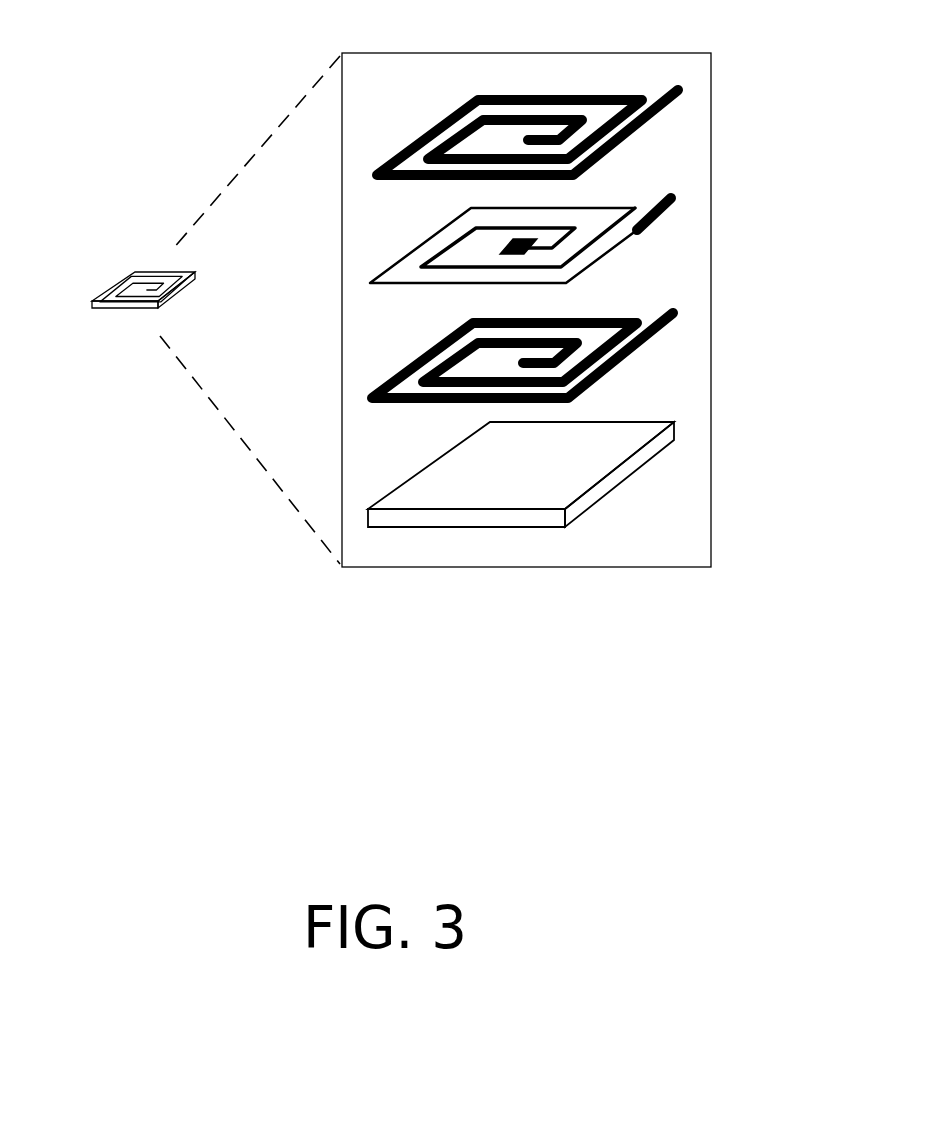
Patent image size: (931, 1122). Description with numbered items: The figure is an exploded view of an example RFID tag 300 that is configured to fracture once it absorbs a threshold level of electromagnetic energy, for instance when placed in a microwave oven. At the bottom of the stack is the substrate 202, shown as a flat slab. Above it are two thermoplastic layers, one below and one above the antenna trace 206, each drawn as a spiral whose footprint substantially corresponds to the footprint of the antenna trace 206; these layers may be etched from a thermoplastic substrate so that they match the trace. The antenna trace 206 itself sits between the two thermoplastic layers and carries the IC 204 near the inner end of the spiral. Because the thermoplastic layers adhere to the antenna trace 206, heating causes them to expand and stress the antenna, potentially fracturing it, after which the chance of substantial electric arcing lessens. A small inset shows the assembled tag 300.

The RFID tag 300 is at (120, 243).
The IC 204 is at (532, 236).
The antenna trace 206 is at (648, 188).
The substrate 202 is at (433, 540).